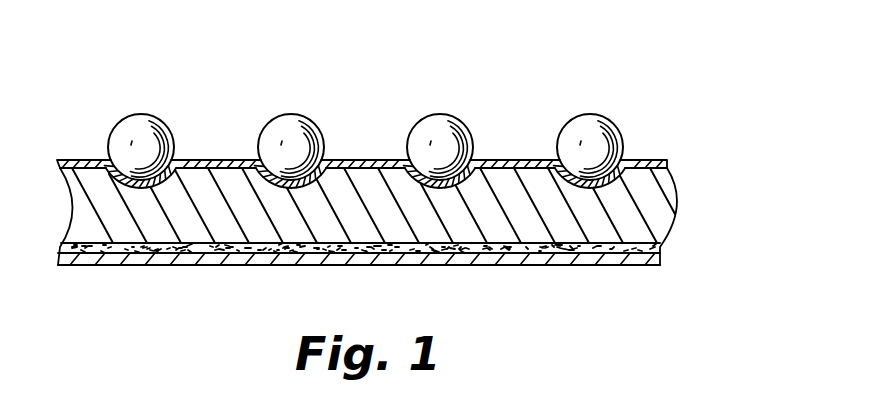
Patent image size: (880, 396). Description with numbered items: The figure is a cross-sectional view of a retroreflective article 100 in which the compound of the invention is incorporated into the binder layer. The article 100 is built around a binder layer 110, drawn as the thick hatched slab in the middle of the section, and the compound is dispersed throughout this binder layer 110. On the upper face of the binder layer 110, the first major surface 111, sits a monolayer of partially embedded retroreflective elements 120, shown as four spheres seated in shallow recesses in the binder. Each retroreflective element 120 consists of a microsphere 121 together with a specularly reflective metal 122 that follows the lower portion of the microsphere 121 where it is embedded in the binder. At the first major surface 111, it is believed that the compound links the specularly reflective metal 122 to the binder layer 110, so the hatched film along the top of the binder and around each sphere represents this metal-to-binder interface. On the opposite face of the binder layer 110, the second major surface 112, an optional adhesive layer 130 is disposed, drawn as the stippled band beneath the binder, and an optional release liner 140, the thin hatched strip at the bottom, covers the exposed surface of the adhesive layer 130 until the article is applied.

The retroreflective article 100 is at (458, 60).
The binder layer 110 is at (663, 210).
The first major surface 111 is at (82, 160).
The second major surface 112 is at (86, 248).
The retroreflective elements 120 is at (683, 108).
The microspheres 121 is at (258, 152).
The specularly reflective metal 122 is at (373, 160).
The adhesive layer 130 is at (657, 248).
The release liner 140 is at (580, 257).